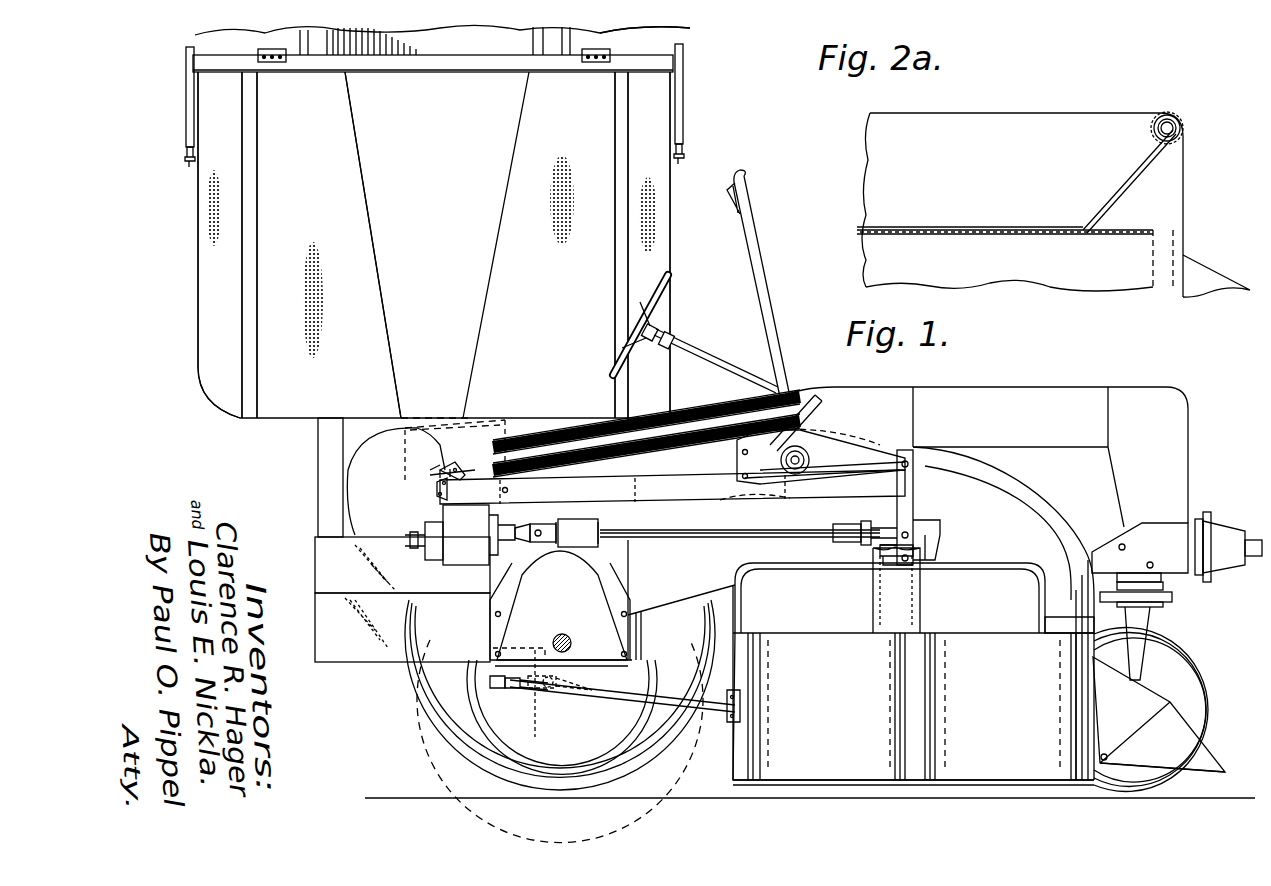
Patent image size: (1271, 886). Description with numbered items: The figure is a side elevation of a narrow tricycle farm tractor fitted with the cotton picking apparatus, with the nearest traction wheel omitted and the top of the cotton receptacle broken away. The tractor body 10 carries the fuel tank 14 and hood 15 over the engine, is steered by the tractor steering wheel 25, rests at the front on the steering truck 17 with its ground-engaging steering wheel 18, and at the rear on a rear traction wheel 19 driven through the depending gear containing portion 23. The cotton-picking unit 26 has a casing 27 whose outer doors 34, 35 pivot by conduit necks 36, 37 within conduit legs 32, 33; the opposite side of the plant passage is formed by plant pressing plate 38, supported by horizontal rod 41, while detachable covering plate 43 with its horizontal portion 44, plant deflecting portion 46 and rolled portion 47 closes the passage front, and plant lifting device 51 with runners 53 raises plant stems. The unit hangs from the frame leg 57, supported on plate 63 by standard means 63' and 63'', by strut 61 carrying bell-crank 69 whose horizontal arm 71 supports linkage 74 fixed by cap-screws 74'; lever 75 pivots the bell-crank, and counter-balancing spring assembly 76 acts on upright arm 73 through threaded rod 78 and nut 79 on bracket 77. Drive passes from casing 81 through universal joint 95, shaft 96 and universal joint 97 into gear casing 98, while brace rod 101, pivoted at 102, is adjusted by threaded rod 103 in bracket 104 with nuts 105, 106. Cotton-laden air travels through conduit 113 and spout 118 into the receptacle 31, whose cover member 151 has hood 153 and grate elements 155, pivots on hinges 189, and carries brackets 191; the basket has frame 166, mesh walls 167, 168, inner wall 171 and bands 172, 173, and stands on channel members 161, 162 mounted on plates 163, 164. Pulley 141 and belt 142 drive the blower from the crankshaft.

In FIG. 1, the body 10 is at (702, 608).
In FIG. 1, the fuel tank 14 is at (850, 392).
In FIG. 1, the hood 15 is at (1008, 391).
In FIG. 1, the steering truck 17 is at (1159, 617).
In FIG. 1, the steering wheel 18 is at (1186, 672).
In FIG. 1, the rear traction wheel 19 is at (442, 716).
In FIG. 1, the depending gear containing portion 23 is at (565, 618).
In FIG. 1, the tractor steering wheel 25 is at (661, 298).
In FIG. 1, the cotton-picking unit 26 is at (975, 569).
In FIG. 2a, the cotton-picking unit 26 is at (1193, 183).
In FIG. 1, the casing 27 is at (1076, 685).
In FIG. 1, the crop-receiving receptacle 31 is at (190, 265).
In FIG. 1, the conduit leg 32 is at (1076, 560).
In FIG. 1, the conduit leg 33 is at (888, 598).
In FIG. 1, the door 34 is at (1018, 711).
In FIG. 1, the door 35 is at (840, 706).
In FIG. 1, the conduit neck 36 is at (1066, 631).
In FIG. 1, the conduit neck 37 is at (888, 607).
In FIG. 2a, the plant pressing plate 38 is at (1125, 278).
In FIG. 2a, the horizontal rod 41 is at (1152, 136).
In FIG. 2a, the detachable covering plate 43 is at (1010, 226).
In FIG. 2a, the horizontal portion 44 is at (917, 231).
In FIG. 2a, the plant deflecting portion 46 is at (1121, 197).
In FIG. 2a, the rolled portion 47 is at (1178, 114).
In FIG. 1, the plant lifting device 51 is at (1216, 753).
In FIG. 1, the ground-engaging runner 53 is at (1213, 772).
In FIG. 1, the fore and aft extending leg 57 is at (707, 497).
In FIG. 1, the strut member 61 is at (803, 460).
In FIG. 1, the plate 63 is at (681, 660).
In FIG. 1, the standard means 63' is at (523, 494).
In FIG. 1, the frame hole 63'' is at (605, 492).
In FIG. 1, the bell-crank 69 is at (827, 451).
In FIG. 1, the horizontal arm 71 is at (862, 458).
In FIG. 1, the upright arm 73 is at (816, 431).
In FIG. 1, the linkage 74 is at (918, 507).
In FIG. 1, the cap-screws 74' is at (916, 563).
In FIG. 1, the lever 75 is at (758, 258).
In FIG. 1, the counter-balancing spring assembly 76 is at (706, 408).
In FIG. 1, the bracket 77 is at (447, 478).
In FIG. 1, the threaded rod 78 is at (412, 442).
In FIG. 1, the nut 79 is at (450, 461).
In FIG. 1, the casing 81 is at (469, 562).
In FIG. 1, the universal joint 95 is at (551, 512).
In FIG. 1, the forwardly projecting shaft 96 is at (742, 538).
In FIG. 1, the universal joint 97 is at (840, 524).
In FIG. 1, the gear casing 98 is at (936, 546).
In FIG. 1, the brace rod 101 is at (667, 702).
In FIG. 1, the pivotal connection 102 is at (720, 722).
In FIG. 1, the threaded rod 103 is at (505, 687).
In FIG. 1, the bracket 104 is at (520, 690).
In FIG. 1, the nut 105 is at (490, 681).
In FIG. 1, the nut 106 is at (550, 722).
In FIG. 1, the conduit 113 is at (748, 500).
In FIG. 1, the spout 118 is at (382, 190).
In FIG. 1, the pulley 141 is at (1200, 518).
In FIG. 1, the belt 142 is at (1206, 510).
In FIG. 1, the cover member 151 is at (668, 43).
In FIG. 1, the hood 153 is at (492, 58).
In FIG. 1, the grate elements 155 is at (401, 50).
In FIG. 1, the channel member 161 is at (498, 423).
In FIG. 1, the channel member 162 is at (328, 453).
In FIG. 1, the plate 163 is at (330, 548).
In FIG. 1, the plate 164 is at (392, 660).
In FIG. 1, the rectangular frame 166 is at (655, 67).
In FIG. 1, the front wall 167 is at (668, 252).
In FIG. 1, the back wall 168 is at (214, 289).
In FIG. 1, the inner wall 171 is at (310, 176).
In FIG. 1, the reinforcing connecting band 172 is at (613, 284).
In FIG. 1, the reinforcing connecting band 173 is at (252, 394).
In FIG. 1, the hinges 189 is at (262, 50).
In FIG. 1, the double-legged bracket 191 is at (186, 121).